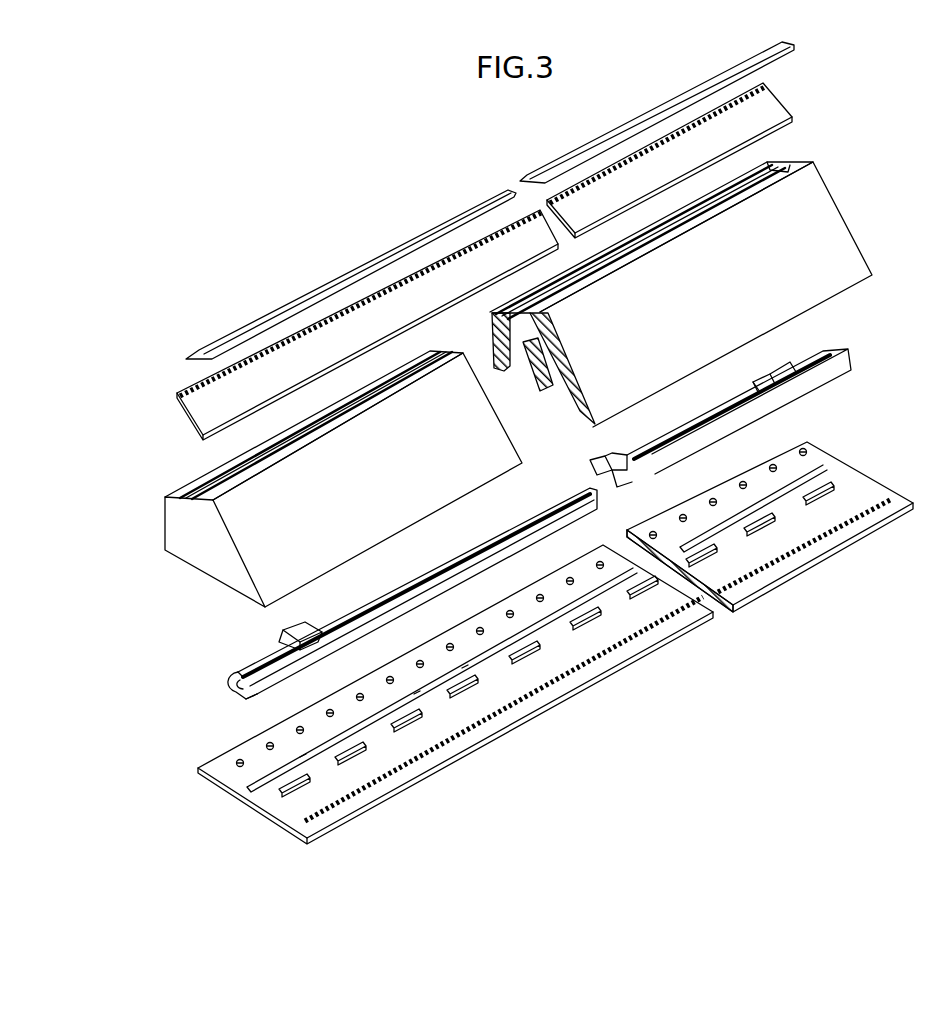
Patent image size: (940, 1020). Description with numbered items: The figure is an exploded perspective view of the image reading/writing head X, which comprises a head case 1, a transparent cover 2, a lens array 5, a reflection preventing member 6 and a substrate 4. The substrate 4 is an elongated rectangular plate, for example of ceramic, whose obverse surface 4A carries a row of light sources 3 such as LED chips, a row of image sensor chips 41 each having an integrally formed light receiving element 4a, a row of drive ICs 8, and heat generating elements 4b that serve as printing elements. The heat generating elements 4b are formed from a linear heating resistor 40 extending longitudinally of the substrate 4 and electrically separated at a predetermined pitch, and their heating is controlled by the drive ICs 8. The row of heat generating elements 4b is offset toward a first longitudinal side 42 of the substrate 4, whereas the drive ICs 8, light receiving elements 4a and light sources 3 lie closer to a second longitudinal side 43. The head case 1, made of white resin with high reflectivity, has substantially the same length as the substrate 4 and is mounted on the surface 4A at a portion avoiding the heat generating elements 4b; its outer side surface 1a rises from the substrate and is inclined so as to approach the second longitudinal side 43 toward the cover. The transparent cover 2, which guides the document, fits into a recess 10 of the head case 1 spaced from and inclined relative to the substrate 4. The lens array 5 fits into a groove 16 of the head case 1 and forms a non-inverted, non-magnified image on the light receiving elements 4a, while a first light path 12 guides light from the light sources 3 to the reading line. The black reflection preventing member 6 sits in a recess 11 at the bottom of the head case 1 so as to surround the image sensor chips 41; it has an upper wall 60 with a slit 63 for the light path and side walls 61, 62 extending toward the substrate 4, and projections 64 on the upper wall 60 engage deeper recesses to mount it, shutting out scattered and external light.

The head case 1 is at (528, 365).
The outer side surface 1a is at (838, 240).
The transparent cover 2 is at (556, 158).
The light sources 3 is at (417, 662).
The substrate 4 is at (564, 618).
The obverse surface 4A is at (838, 512).
The light receiving element 4a is at (262, 788).
The heat generating elements 4b is at (600, 662).
The lens array 5 is at (770, 102).
The reflection preventing member 6 is at (512, 522).
The drive ICs 8 is at (420, 724).
The recess 10 is at (783, 164).
The recess 11 is at (567, 406).
The first light path 12 is at (518, 371).
The groove 16 is at (533, 393).
The heating resistor 40 is at (826, 537).
The image sensor chips 41 is at (328, 733).
The first longitudinal side 42 is at (845, 535).
The second longitudinal side 43 is at (660, 527).
The upper wall 60 is at (236, 690).
The side wall 61 is at (228, 680).
The side wall 62 is at (252, 700).
The slit 63 is at (267, 652).
The projections 64 is at (314, 630).
The image reading/writing head X is at (262, 280).